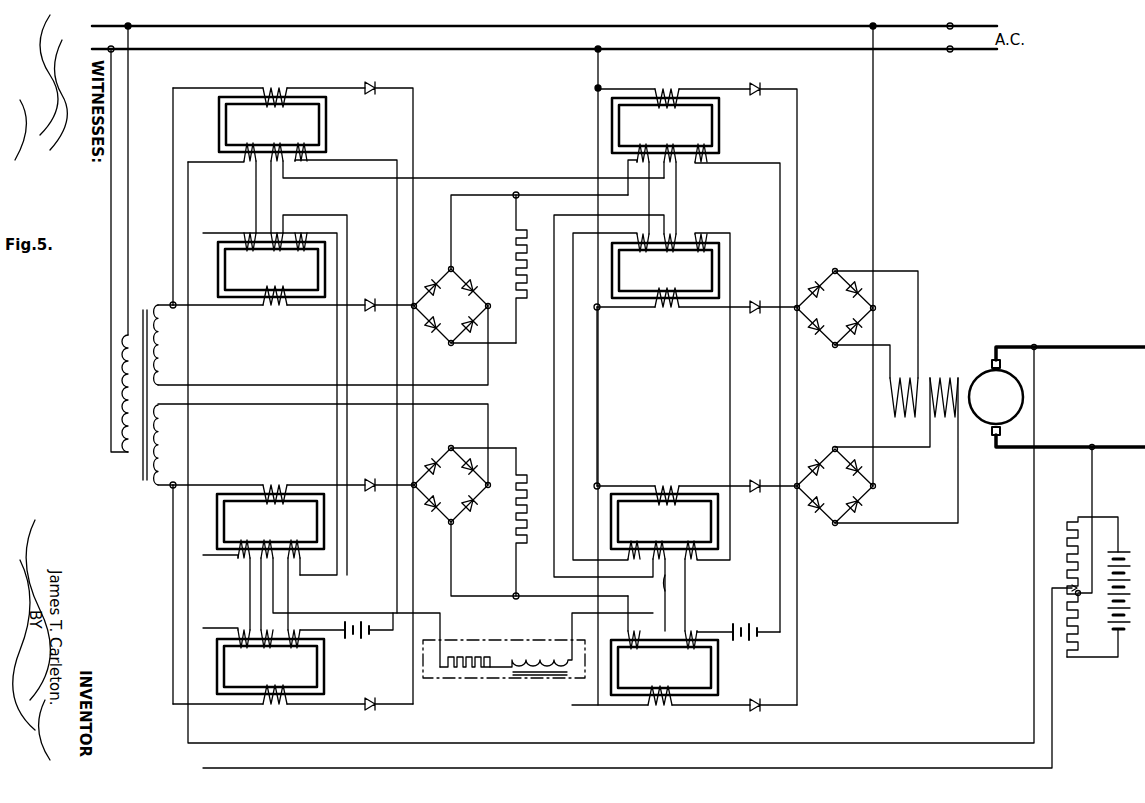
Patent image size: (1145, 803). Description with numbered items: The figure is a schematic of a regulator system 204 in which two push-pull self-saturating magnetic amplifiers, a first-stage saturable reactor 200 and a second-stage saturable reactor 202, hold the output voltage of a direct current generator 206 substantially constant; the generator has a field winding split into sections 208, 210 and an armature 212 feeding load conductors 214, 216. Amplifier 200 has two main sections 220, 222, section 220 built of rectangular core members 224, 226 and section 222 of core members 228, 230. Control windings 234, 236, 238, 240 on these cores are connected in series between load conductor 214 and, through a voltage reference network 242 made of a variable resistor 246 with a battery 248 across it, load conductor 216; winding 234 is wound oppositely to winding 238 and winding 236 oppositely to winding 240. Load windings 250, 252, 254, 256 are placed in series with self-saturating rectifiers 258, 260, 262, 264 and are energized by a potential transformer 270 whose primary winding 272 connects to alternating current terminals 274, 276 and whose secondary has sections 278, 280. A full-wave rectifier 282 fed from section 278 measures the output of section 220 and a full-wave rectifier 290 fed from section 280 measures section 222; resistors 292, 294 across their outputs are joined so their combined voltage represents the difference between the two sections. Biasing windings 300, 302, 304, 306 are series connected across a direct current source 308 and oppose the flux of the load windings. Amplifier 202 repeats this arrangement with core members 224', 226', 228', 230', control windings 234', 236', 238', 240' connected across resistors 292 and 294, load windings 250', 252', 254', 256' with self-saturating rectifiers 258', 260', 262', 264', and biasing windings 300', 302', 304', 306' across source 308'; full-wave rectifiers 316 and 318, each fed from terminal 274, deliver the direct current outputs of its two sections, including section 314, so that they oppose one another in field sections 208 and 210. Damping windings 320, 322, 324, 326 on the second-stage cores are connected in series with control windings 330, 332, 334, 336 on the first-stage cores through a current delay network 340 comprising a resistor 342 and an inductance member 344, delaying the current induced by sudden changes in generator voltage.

The push-pull saturable reactor 200 is at (311, 722).
The push-pull saturable reactor 202 is at (711, 725).
The regulator system 204 is at (611, 476).
The direct current generator 206 is at (996, 371).
The field winding section 208 is at (900, 407).
The field winding section 210 is at (942, 362).
The armature 212 is at (988, 362).
The load conductor 214 is at (1056, 344).
The load conductor 216 is at (1056, 450).
The main section 220 is at (316, 193).
The main section 222 is at (321, 593).
The rectangular core member 224 is at (291, 124).
The rectangular core member 226 is at (291, 268).
The rectangular core member 228 is at (290, 521).
The rectangular core member 230 is at (291, 666).
The control winding 234 is at (222, 161).
The control winding 236 is at (268, 396).
The control winding 238 is at (226, 560).
The control winding 240 is at (226, 626).
The voltage reference network 242 is at (1091, 677).
The variable resistor 246 is at (1070, 525).
The battery 248 is at (1104, 620).
The load winding 250 is at (269, 86).
The load winding 252 is at (269, 306).
The load winding 254 is at (269, 484).
The load winding 256 is at (269, 705).
The self-saturating rectifier 258 is at (381, 383).
The self-saturating rectifier 260 is at (385, 295).
The self-saturating rectifier 262 is at (384, 473).
The self-saturating rectifier 264 is at (382, 692).
The potential transformer 270 is at (132, 407).
The primary winding 272 is at (124, 455).
The terminal 274 is at (953, 24).
The terminal 276 is at (950, 52).
The secondary winding section 278 is at (158, 345).
The secondary winding section 280 is at (158, 435).
The full-wave dry-type rectifier 282 is at (456, 290).
The full-wave dry-type rectifier 290 is at (437, 470).
The resistor 292 is at (512, 240).
The resistor 294 is at (512, 545).
The biasing winding 300 is at (346, 378).
The biasing winding 302 is at (315, 394).
The biasing winding 304 is at (311, 585).
The biasing winding 306 is at (316, 629).
The direct current source 308 is at (369, 636).
The section 314 is at (746, 589).
The full-wave dry-type rectifier 316 is at (828, 296).
The full-wave dry-type rectifier 318 is at (849, 488).
The damping winding 320 is at (668, 144).
The damping winding 322 is at (672, 252).
The damping winding 324 is at (658, 545).
The damping winding 326 is at (665, 590).
The control winding 330 is at (275, 143).
The control winding 332 is at (280, 251).
The control winding 334 is at (270, 545).
The control winding 336 is at (272, 648).
The current delay network 340 is at (512, 634).
The resistor 342 is at (482, 670).
The inductance member 344 is at (568, 675).
The rectangular core member 224' is at (686, 125).
The rectangular core member 226' is at (686, 270).
The rectangular core member 228' is at (685, 521).
The rectangular core member 230' is at (684, 667).
The control winding 234' is at (623, 169).
The control winding 236' is at (611, 389).
The control winding 238' is at (618, 561).
The control winding 240' is at (654, 635).
The load winding 250' is at (674, 87).
The load winding 252' is at (672, 308).
The load winding 254' is at (672, 406).
The load winding 256' is at (661, 706).
The self-saturating rectifier 258' is at (773, 383).
The self-saturating rectifier 260' is at (767, 297).
The self-saturating rectifier 262' is at (767, 475).
The self-saturating rectifier 264' is at (773, 693).
The biasing winding 300' is at (737, 388).
The biasing winding 302' is at (713, 387).
The biasing winding 304' is at (706, 586).
The biasing winding 306' is at (711, 627).
The direct current source 308' is at (756, 643).